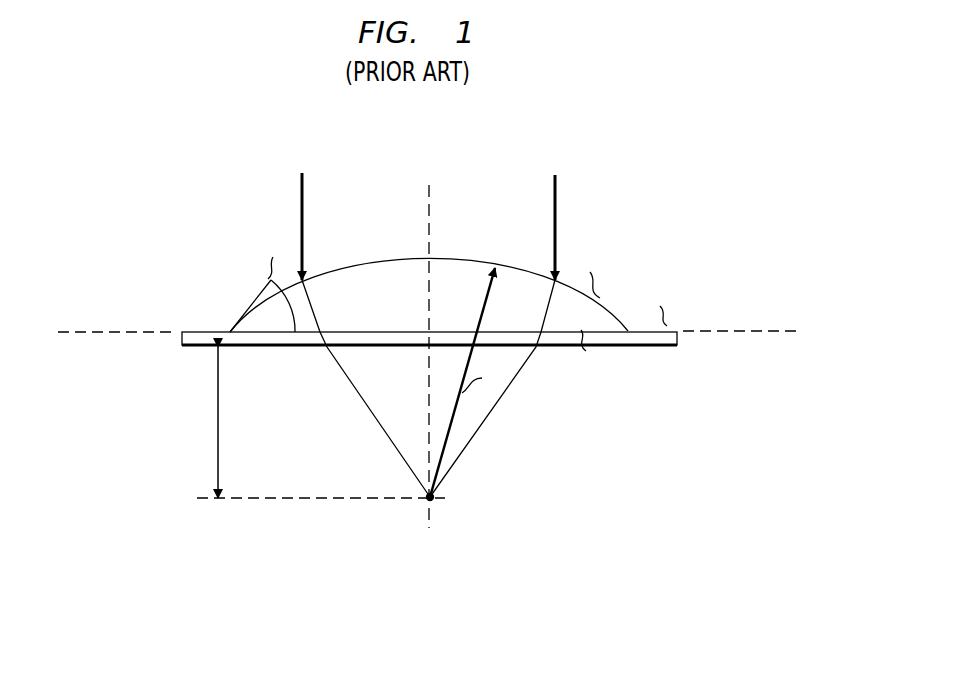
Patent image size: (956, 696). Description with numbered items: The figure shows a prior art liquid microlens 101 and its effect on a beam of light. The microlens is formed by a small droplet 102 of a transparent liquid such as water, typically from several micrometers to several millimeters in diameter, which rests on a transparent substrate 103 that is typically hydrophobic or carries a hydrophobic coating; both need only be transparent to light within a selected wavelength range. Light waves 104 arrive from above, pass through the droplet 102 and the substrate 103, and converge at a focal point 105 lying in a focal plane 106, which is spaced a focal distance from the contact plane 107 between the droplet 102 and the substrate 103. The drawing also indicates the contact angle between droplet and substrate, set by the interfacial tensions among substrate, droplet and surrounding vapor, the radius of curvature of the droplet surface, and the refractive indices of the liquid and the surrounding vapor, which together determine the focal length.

The liquid microlens 101 is at (118, 192).
The droplet 102 is at (481, 262).
The transparent substrate 103 is at (664, 348).
The light waves 104 is at (302, 178).
The focal point 105 is at (432, 499).
The focal plane 106 is at (305, 499).
The contact plane 107 is at (100, 334).